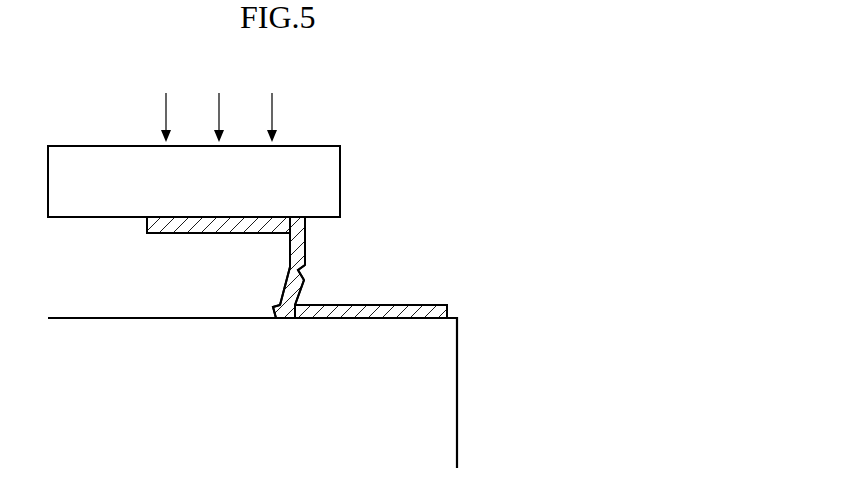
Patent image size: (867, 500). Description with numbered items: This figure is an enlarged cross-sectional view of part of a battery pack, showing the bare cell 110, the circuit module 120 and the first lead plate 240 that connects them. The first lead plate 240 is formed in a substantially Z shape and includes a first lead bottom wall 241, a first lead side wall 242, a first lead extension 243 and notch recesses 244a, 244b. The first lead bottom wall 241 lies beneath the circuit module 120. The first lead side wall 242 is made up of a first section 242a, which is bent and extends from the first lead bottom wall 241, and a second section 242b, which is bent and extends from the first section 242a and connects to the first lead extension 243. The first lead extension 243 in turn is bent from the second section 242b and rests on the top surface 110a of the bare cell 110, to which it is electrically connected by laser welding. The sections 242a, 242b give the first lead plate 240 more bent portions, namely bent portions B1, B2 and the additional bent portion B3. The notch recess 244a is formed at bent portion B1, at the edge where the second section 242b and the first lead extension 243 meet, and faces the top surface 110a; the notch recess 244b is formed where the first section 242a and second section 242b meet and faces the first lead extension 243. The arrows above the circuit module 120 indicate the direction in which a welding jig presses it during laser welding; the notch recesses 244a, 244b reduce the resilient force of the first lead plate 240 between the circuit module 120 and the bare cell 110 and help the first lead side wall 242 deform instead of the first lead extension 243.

The circuit module 120 is at (333, 165).
The bare cell 110 is at (433, 408).
The top surface of bare cell 110a is at (70, 317).
The first lead plate 240 is at (465, 207).
The first lead bottom wall 241 is at (172, 234).
The first lead side wall 242 is at (434, 226).
The first section 242a is at (306, 247).
The second section 242b is at (306, 269).
The first lead extension 243 is at (367, 319).
The notch recess 244a is at (276, 316).
The notch recess 244b is at (305, 274).
The bent portion B1 is at (272, 315).
The bent portion B2 is at (282, 238).
The additional bent portion B3 is at (275, 275).